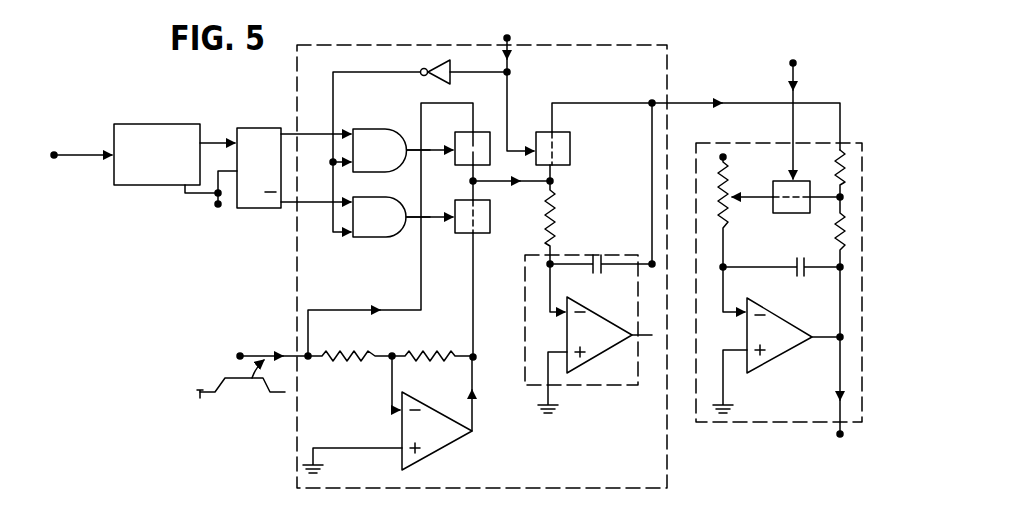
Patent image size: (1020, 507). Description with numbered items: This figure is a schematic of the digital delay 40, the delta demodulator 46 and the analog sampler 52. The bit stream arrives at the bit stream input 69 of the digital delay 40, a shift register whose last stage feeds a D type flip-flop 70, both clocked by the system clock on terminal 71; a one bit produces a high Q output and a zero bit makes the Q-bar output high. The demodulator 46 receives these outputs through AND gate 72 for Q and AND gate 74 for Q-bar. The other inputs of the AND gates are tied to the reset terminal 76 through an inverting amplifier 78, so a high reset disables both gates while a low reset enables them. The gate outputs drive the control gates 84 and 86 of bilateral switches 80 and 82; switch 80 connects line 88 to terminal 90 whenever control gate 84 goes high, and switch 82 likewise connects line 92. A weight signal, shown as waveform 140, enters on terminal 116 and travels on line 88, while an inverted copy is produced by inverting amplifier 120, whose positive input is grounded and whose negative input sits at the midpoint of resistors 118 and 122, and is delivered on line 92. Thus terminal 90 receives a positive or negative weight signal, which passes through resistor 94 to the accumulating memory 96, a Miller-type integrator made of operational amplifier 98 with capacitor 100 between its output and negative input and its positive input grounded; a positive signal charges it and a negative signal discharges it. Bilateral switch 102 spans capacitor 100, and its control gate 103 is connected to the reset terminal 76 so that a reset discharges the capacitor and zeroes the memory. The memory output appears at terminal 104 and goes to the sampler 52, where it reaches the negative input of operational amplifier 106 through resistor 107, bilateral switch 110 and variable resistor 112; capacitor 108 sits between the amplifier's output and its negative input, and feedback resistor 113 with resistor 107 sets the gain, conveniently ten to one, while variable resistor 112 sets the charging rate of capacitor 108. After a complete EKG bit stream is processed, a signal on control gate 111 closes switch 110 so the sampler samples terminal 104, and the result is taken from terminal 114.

The digital delay 40 is at (170, 121).
The delta demodulator 46 is at (370, 43).
The analog sampler 52 is at (866, 160).
The bit stream input 69 is at (54, 159).
The D type flip-flop 70 is at (262, 128).
The clock terminal 71 is at (215, 204).
The AND gate 72 is at (366, 129).
The AND gate 74 is at (377, 237).
The reset terminal 76 is at (505, 38).
The inverting amplifier 78 is at (432, 61).
The bilateral switch 80 is at (486, 132).
The bilateral switch 82 is at (490, 228).
The control gate 84 is at (436, 151).
The control gate 86 is at (435, 218).
The line 88 is at (421, 117).
The terminal 90 is at (478, 184).
The line 92 is at (473, 349).
The resistor 94 is at (553, 209).
The accumulating memory 96 is at (590, 251).
The operational amplifier 98 is at (604, 316).
The capacitor 100 is at (599, 273).
The bilateral switch 102 is at (542, 132).
The control gate 103 is at (513, 171).
The terminal 104 is at (652, 101).
The operational amplifier 106 is at (774, 358).
The resistor 107 is at (837, 170).
The capacitor 108 is at (797, 259).
The bilateral switch 110 is at (773, 192).
The control gate 111 is at (791, 63).
The variable resistor 112 is at (731, 163).
The feedback resistor 113 is at (837, 229).
The terminal 114 is at (838, 434).
The terminal 116 is at (243, 353).
The resistor 118 is at (346, 353).
The inverting amplifier 120 is at (447, 445).
The resistor 122 is at (428, 352).
The weight signal waveform 140 is at (231, 392).